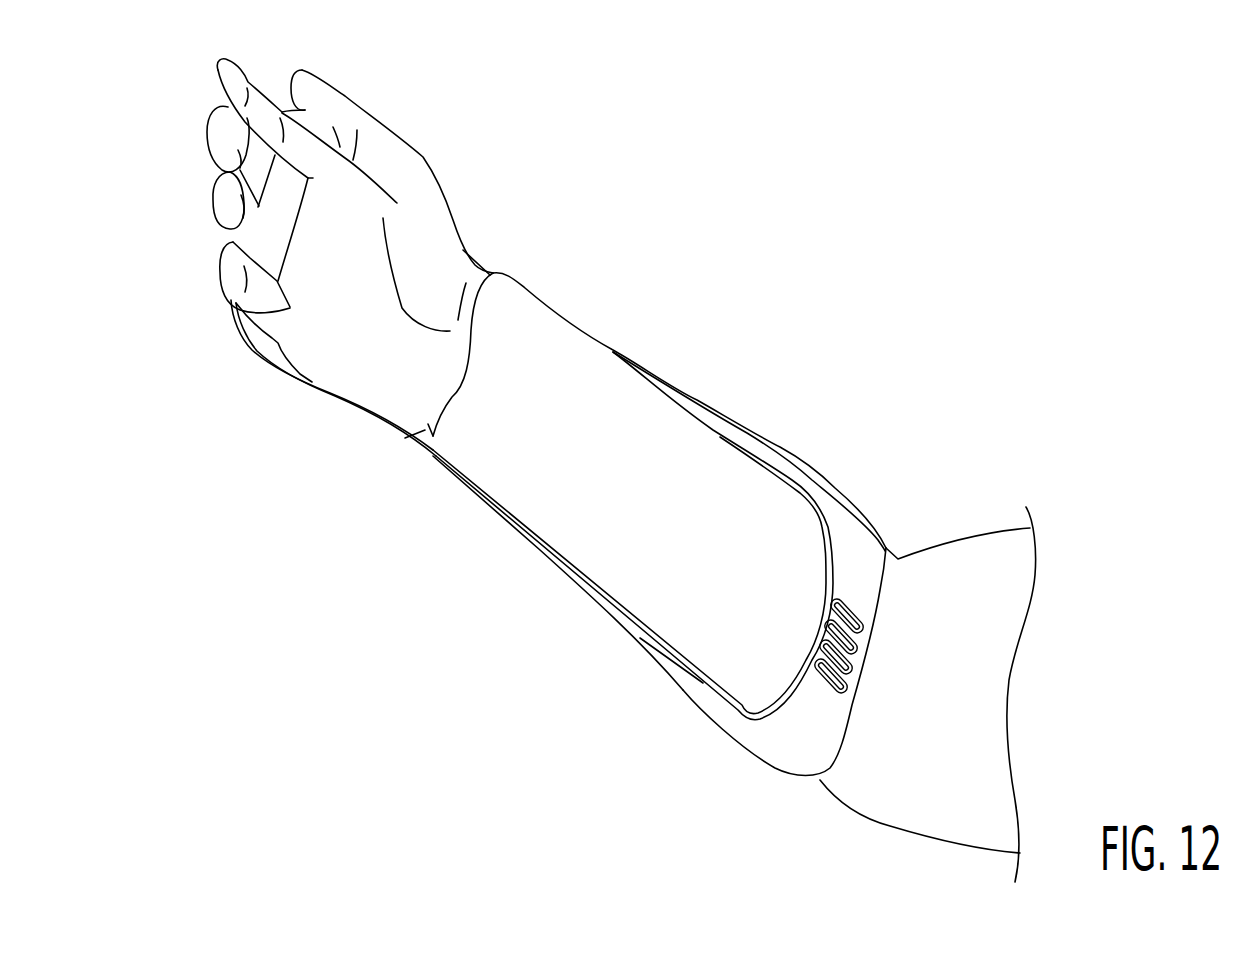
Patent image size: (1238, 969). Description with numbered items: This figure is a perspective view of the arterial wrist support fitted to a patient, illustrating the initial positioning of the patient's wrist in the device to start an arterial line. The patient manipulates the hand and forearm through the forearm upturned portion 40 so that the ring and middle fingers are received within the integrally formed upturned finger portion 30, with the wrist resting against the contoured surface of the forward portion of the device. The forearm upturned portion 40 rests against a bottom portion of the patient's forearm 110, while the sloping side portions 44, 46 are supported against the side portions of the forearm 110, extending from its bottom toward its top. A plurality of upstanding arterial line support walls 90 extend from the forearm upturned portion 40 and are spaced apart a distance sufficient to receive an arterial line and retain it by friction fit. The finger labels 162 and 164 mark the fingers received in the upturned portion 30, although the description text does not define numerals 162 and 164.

The upturned portion 30 is at (267, 232).
The forearm upturned portion 40 is at (798, 752).
The sloping side portion 44 is at (778, 457).
The sloping side portion 46 is at (650, 655).
The arterial line support walls 90 is at (850, 607).
The forearm 110 is at (703, 683).
The middle finger 162 is at (213, 113).
The ring finger 164 is at (227, 197).